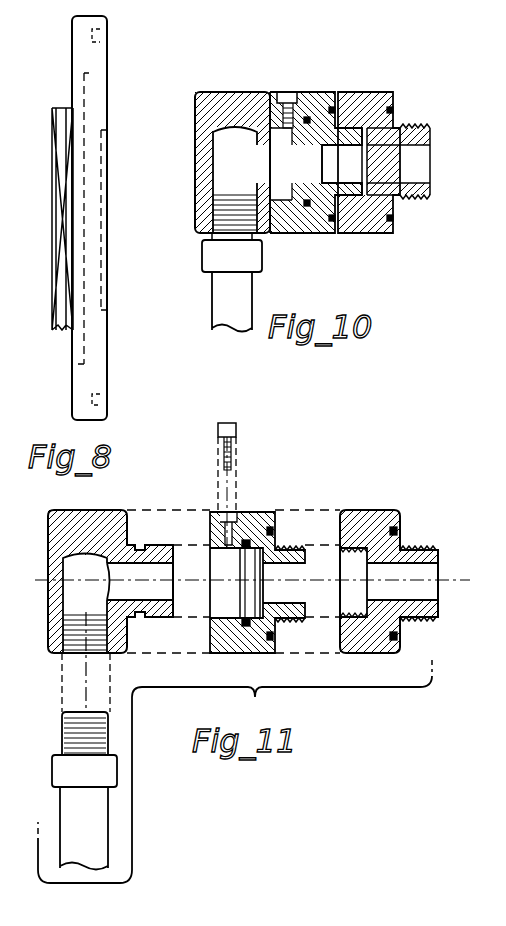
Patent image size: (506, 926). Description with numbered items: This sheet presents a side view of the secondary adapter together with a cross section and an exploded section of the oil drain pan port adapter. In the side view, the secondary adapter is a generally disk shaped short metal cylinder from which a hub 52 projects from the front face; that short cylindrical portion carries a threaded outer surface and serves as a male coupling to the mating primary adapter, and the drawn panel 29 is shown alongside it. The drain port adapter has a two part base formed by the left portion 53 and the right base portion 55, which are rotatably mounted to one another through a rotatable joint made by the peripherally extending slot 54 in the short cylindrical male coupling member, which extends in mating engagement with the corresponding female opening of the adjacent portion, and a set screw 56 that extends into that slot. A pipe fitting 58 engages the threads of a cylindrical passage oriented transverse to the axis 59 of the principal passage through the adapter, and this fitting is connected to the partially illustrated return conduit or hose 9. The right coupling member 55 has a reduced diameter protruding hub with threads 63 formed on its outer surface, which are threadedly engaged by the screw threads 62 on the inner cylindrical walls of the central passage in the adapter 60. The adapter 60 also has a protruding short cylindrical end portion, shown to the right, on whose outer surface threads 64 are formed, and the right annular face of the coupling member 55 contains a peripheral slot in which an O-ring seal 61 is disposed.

In FIG. 10, the conduit 9 is at (212, 307).
In FIG. 11, the conduit 9 is at (60, 804).
In FIG. 8, the panel board 29 is at (64, 72).
In FIG. 8, the hub 52 is at (70, 110).
In FIG. 10, the left portion 53 is at (196, 106).
In FIG. 11, the left portion 53 is at (111, 596).
In FIG. 11, the peripherally extending slot 54 is at (140, 545).
In FIG. 10, the right base portion 55 is at (305, 92).
In FIG. 11, the right base portion 55 is at (269, 565).
In FIG. 10, the set screw 56 is at (289, 92).
In FIG. 11, the set screw 56 is at (236, 446).
In FIG. 11, the pipe fitting 58 is at (62, 730).
In FIG. 11, the axis 59 is at (118, 583).
In FIG. 10, the adapter 60 is at (358, 92).
In FIG. 11, the adapter 60 is at (366, 565).
In FIG. 11, the O-ring seal 61 is at (278, 525).
In FIG. 11, the screw threads 62 is at (340, 612).
In FIG. 11, the threads 63 is at (290, 550).
In FIG. 10, the threads 64 is at (402, 128).
In FIG. 11, the threads 64 is at (418, 617).